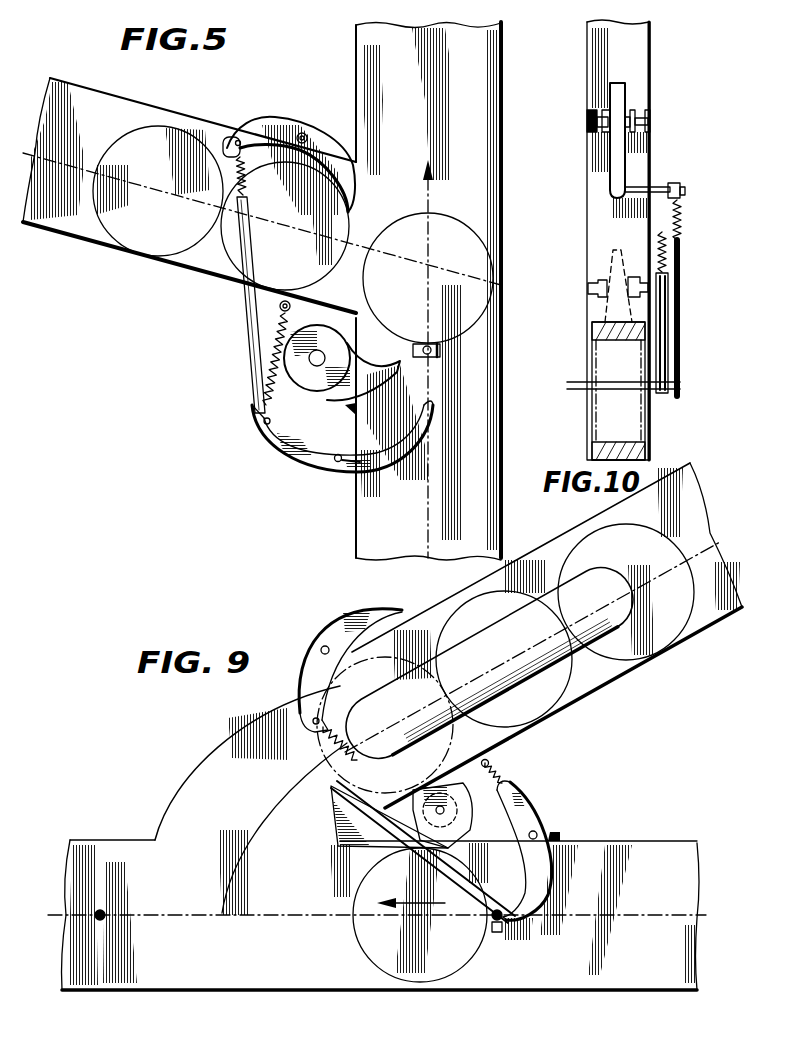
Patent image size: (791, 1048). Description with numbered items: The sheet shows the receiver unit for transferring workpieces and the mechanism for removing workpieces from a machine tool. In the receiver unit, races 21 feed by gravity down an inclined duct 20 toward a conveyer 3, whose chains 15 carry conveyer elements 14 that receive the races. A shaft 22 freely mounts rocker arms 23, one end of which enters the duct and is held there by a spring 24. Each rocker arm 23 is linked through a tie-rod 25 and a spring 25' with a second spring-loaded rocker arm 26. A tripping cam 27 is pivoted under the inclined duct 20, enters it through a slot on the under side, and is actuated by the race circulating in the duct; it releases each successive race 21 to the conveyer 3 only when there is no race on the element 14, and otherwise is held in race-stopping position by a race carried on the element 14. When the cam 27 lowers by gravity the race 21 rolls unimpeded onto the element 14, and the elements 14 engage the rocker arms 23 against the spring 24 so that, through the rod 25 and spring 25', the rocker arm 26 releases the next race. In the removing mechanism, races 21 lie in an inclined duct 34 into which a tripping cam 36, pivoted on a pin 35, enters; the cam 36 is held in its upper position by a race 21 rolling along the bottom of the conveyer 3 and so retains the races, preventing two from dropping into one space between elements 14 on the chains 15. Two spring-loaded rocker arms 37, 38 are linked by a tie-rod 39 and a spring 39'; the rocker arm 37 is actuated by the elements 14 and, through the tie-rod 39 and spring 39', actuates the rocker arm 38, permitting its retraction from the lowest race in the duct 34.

In FIG. 10, the conveyer 3 is at (612, 423).
In FIG. 9, the conveyer 3 is at (143, 880).
In FIG. 5, the conveyer element 14 is at (440, 354).
In FIG. 9, the conveyer element 14 is at (98, 912).
In FIG. 5, the chains 15 is at (430, 107).
In FIG. 9, the chains 15 is at (625, 917).
In FIG. 5, the inclined duct 20 is at (203, 257).
In FIG. 5, the race 21 is at (152, 126).
In FIG. 9, the race 21 is at (490, 630).
In FIG. 5, the shaft 22 is at (334, 463).
In FIG. 5, the rocker arm 23 is at (305, 458).
In FIG. 5, the spring 24 is at (277, 349).
In FIG. 5, the tie-rod 25 is at (205, 310).
In FIG. 5, the spring 25' is at (240, 138).
In FIG. 5, the second rocker arm 26 is at (283, 125).
In FIG. 5, the tripping cam 27 is at (313, 380).
In FIG. 10, the duct 34 is at (630, 50).
In FIG. 9, the duct 34 is at (556, 560).
In FIG. 9, the pin 35 is at (445, 810).
In FIG. 10, the tripping cam 36 is at (613, 300).
In FIG. 9, the tripping cam 36 is at (337, 857).
In FIG. 10, the rocker arm 37 is at (660, 340).
In FIG. 9, the rocker arm 37 is at (540, 814).
In FIG. 10, the rocker arm 38 is at (618, 172).
In FIG. 9, the rocker arm 38 is at (337, 631).
In FIG. 10, the tie-rod 39 is at (706, 312).
In FIG. 9, the tie-rod 39 is at (249, 799).
In FIG. 10, the spring 39' is at (698, 233).
In FIG. 9, the spring 39' is at (327, 751).